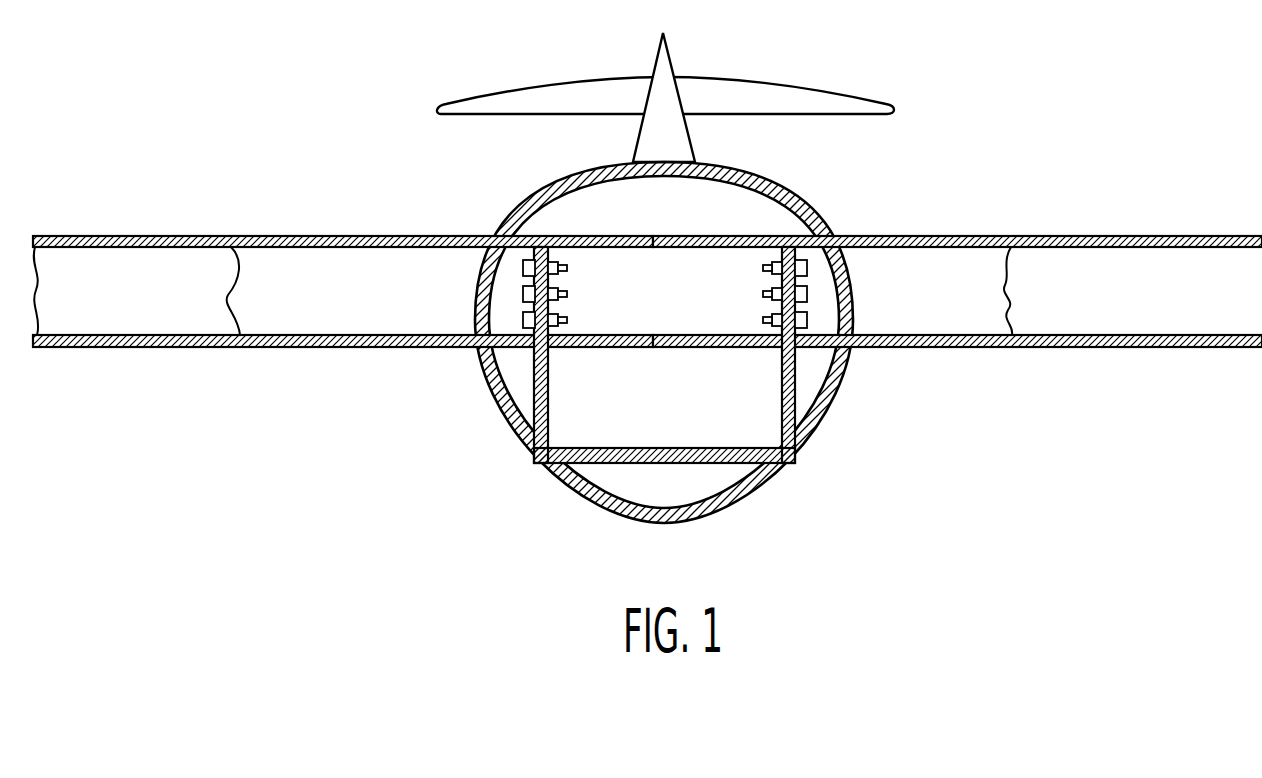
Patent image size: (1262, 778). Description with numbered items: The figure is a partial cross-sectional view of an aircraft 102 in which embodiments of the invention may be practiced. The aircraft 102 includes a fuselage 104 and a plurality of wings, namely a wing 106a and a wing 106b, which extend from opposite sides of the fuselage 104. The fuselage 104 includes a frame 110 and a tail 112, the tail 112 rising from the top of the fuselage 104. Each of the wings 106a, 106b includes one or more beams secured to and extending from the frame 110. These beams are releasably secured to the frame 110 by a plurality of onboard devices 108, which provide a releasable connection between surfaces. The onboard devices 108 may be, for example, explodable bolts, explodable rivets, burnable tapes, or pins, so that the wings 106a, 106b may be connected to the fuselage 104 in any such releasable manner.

The aircraft 102 is at (647, 308).
The fuselage 104 is at (803, 194).
The wing 106a is at (173, 235).
The wing 106b is at (1160, 235).
The onboard devices 108 is at (763, 268).
The frame 110 is at (845, 392).
The tail 112 is at (690, 132).